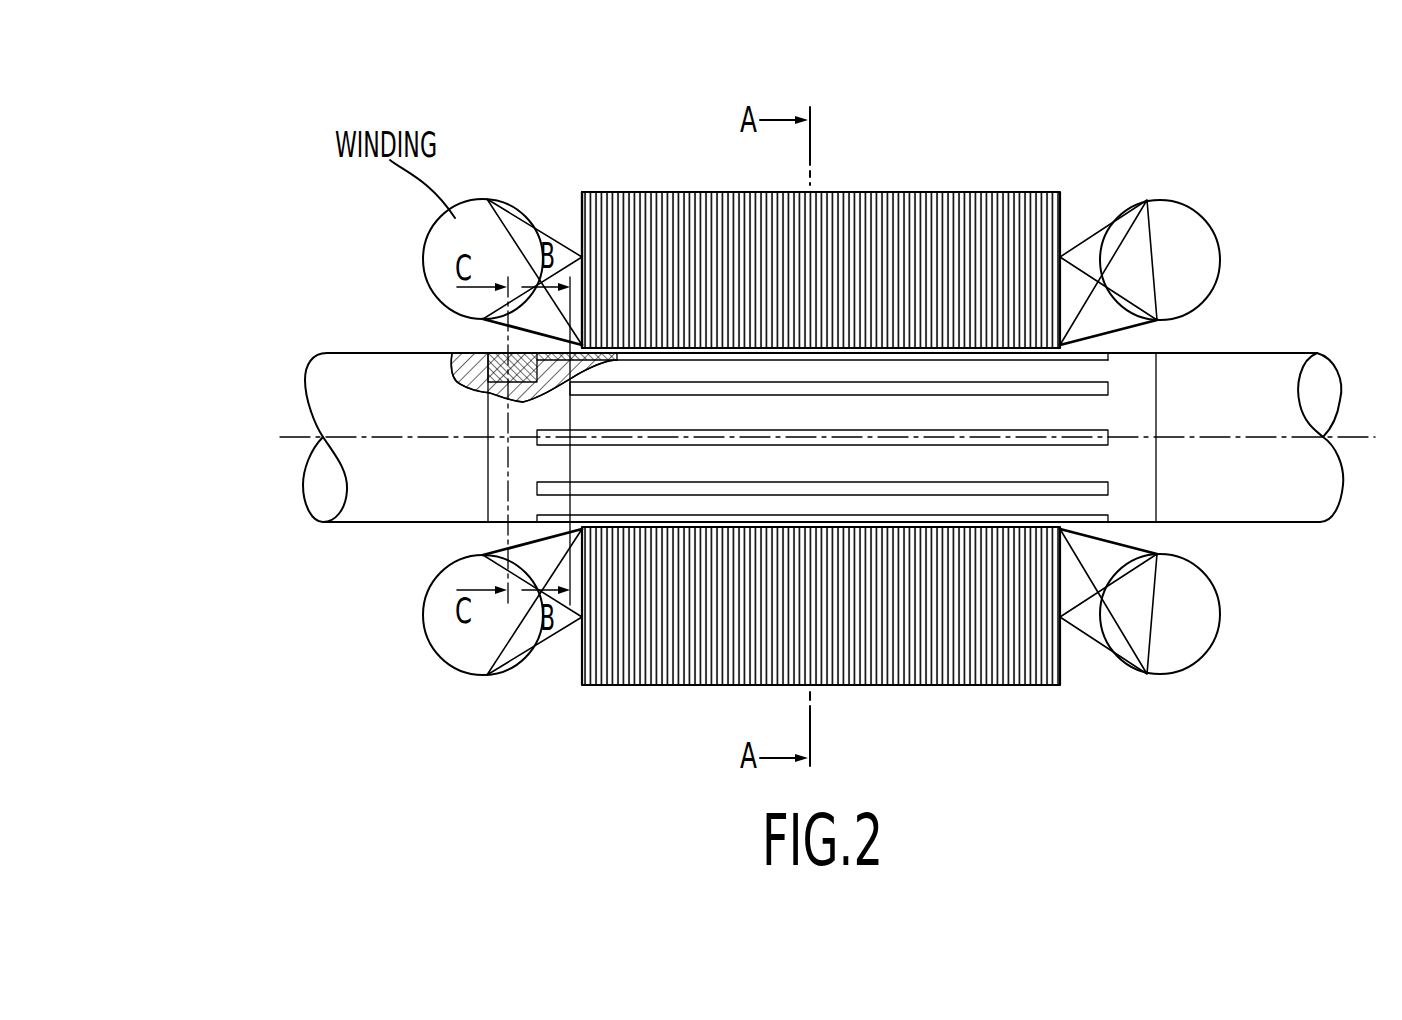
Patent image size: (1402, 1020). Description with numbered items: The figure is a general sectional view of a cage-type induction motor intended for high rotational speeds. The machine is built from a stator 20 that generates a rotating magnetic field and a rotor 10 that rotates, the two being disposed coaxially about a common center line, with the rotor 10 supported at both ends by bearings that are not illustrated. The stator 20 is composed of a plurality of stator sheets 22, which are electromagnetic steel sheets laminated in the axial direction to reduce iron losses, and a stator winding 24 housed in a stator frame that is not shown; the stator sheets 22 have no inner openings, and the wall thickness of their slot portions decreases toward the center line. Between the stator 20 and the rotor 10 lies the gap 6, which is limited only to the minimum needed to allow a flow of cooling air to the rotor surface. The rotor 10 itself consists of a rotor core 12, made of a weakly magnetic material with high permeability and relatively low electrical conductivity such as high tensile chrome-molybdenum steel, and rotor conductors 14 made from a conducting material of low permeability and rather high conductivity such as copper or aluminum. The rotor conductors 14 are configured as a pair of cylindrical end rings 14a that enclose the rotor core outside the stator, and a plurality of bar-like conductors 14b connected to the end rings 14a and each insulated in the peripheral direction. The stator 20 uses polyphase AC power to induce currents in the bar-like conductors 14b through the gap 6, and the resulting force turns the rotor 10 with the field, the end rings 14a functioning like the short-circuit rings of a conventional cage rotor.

The gap 6 is at (1075, 347).
The rotor 10 is at (372, 512).
The rotor core 12 is at (413, 485).
The rotor conductors 14 is at (520, 460).
The end rings 14a is at (333, 339).
The bar-like conductors 14b is at (938, 460).
The stator 20 is at (947, 190).
The stator sheets 22 is at (642, 205).
The stator winding 24 is at (1193, 238).